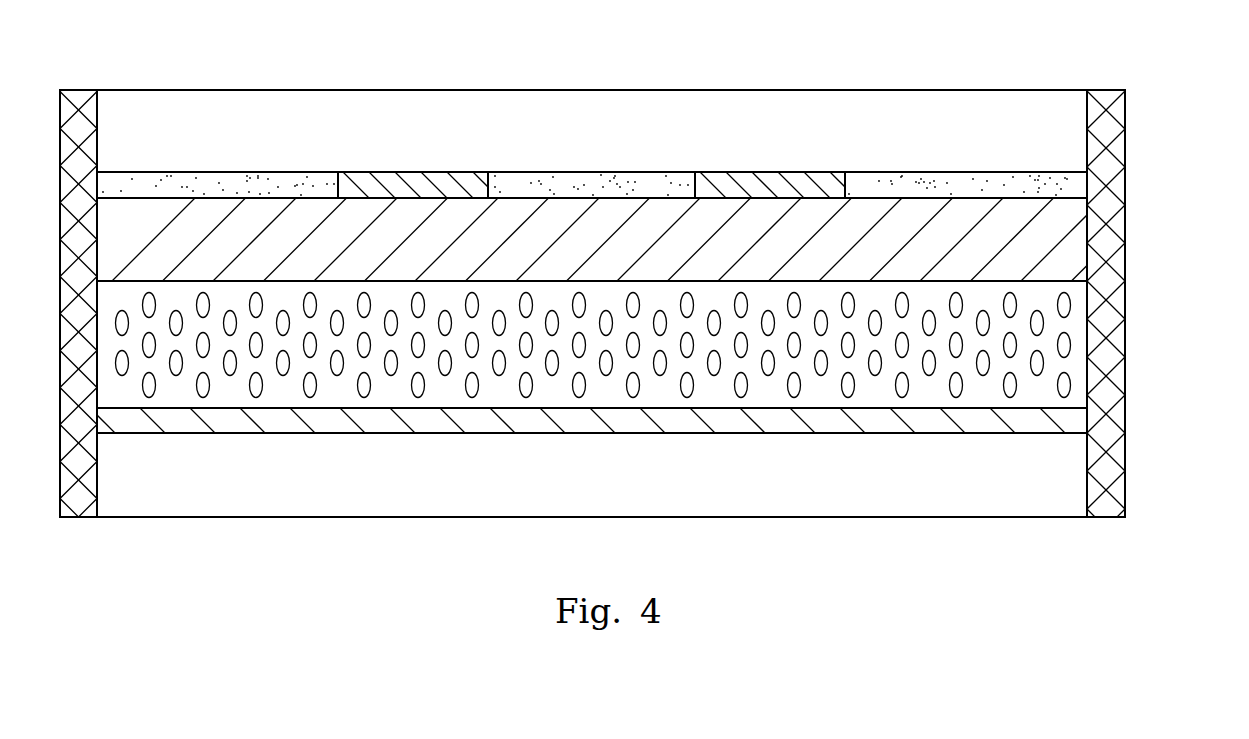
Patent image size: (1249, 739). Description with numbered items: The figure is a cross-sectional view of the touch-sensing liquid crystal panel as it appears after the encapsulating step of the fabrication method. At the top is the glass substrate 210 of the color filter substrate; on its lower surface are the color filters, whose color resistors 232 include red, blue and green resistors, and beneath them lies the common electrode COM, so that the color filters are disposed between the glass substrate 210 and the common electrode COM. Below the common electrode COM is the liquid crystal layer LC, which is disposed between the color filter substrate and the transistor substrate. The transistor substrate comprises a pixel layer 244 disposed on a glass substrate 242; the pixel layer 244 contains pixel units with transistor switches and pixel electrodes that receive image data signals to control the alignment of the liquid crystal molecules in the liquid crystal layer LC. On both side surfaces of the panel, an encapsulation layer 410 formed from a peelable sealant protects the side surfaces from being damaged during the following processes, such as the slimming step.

The encapsulation layer 410 is at (76, 107).
The glass substrate 210 is at (555, 103).
The color resistors 232 is at (1075, 190).
The common electrode COM is at (1073, 240).
The liquid crystal layer LC is at (1075, 343).
The pixel layer 244 is at (1073, 422).
The glass substrate 242 is at (1073, 478).